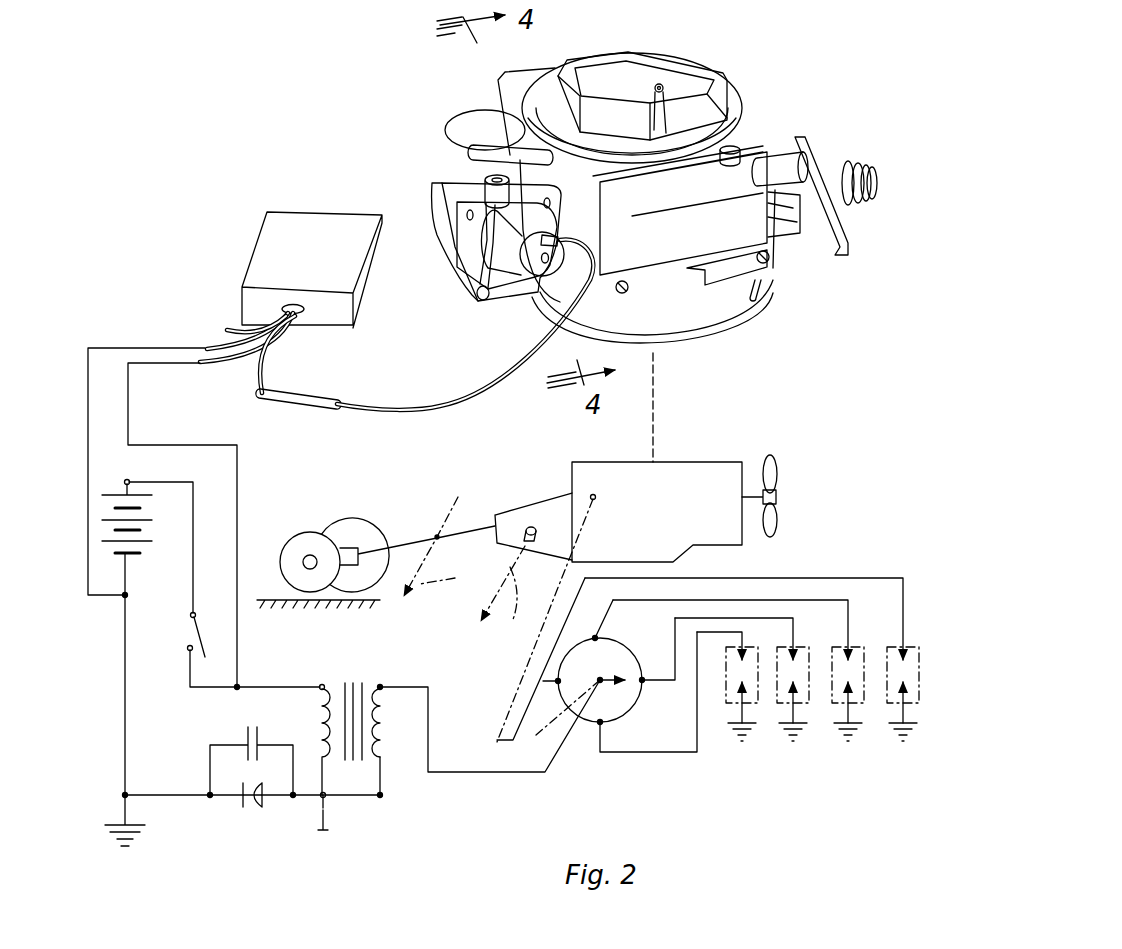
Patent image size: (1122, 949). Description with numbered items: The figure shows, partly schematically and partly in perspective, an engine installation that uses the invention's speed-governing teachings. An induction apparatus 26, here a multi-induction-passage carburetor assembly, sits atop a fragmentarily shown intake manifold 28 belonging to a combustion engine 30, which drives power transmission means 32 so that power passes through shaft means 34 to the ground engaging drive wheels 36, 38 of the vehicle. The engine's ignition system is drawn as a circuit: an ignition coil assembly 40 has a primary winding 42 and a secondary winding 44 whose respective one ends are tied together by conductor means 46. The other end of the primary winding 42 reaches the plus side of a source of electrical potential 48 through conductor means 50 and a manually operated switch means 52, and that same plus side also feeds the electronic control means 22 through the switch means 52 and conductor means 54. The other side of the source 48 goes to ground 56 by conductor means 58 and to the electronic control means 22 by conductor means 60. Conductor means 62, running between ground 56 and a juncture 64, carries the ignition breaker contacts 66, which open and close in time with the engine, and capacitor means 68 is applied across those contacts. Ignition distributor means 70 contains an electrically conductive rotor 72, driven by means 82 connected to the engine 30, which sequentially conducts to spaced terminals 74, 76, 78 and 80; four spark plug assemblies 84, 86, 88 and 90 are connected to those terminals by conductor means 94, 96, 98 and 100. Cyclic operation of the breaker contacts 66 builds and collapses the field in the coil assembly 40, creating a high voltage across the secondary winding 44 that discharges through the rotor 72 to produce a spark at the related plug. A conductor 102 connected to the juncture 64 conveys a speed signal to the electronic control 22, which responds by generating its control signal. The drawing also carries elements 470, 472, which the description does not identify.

The electronic control means 22 is at (314, 203).
The induction apparatus 26 is at (768, 128).
The intake manifold 28 is at (735, 312).
The combustion engine 30 is at (712, 480).
The power transmission means 32 is at (507, 518).
The shaft means 34 is at (444, 533).
The ground engaging drive wheel 36 is at (305, 538).
The ground engaging drive wheel 38 is at (372, 537).
The ignition coil assembly 40 is at (353, 742).
The primary winding 42 is at (320, 711).
The secondary winding 44 is at (388, 715).
The conductor means 46 is at (381, 797).
The source of electrical potential 48 is at (143, 524).
The conductor means 50 is at (193, 530).
The switch means 52 is at (188, 642).
The conductor means 54 is at (200, 364).
The ground 56 is at (130, 840).
The conductor means 58 is at (123, 732).
The conductor means 60 is at (213, 349).
The conductor means 62 is at (180, 795).
The juncture 64 is at (326, 798).
The ignition breaker contacts 66 is at (252, 807).
The capacitor means 68 is at (247, 735).
The ignition distributor means 70 is at (603, 700).
The rotor 72 is at (606, 676).
The terminal 74 is at (556, 683).
The terminal 76 is at (597, 637).
The terminal 78 is at (644, 682).
The terminal 80 is at (600, 724).
The drive means 82 is at (528, 658).
The spark plug assembly 84 is at (757, 692).
The spark plug assembly 86 is at (810, 692).
The spark plug assembly 88 is at (865, 692).
The spark plug assembly 90 is at (919, 676).
The conductor means 94 is at (651, 753).
The conductor means 96 is at (794, 637).
The conductor means 98 is at (849, 620).
The conductor means 100 is at (904, 603).
The conductor 102 is at (227, 328).
The sensor 470 is at (507, 590).
The axis 472 is at (457, 569).